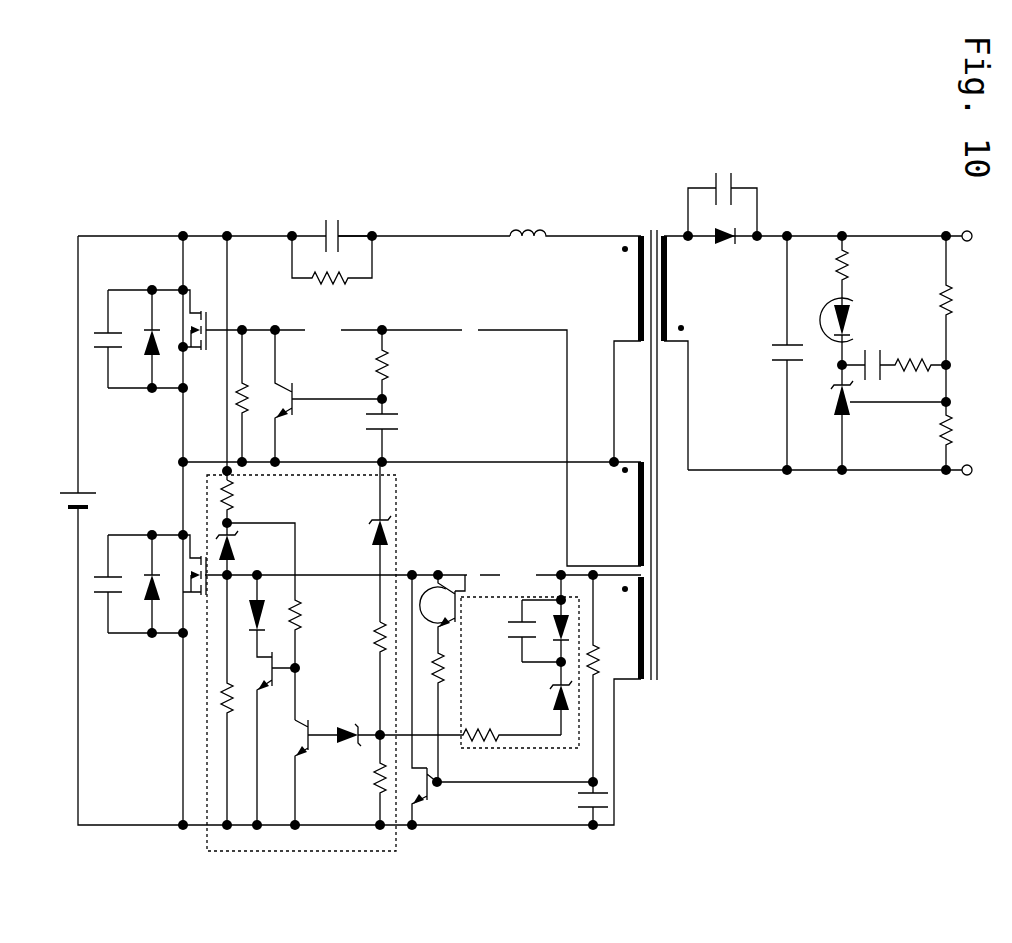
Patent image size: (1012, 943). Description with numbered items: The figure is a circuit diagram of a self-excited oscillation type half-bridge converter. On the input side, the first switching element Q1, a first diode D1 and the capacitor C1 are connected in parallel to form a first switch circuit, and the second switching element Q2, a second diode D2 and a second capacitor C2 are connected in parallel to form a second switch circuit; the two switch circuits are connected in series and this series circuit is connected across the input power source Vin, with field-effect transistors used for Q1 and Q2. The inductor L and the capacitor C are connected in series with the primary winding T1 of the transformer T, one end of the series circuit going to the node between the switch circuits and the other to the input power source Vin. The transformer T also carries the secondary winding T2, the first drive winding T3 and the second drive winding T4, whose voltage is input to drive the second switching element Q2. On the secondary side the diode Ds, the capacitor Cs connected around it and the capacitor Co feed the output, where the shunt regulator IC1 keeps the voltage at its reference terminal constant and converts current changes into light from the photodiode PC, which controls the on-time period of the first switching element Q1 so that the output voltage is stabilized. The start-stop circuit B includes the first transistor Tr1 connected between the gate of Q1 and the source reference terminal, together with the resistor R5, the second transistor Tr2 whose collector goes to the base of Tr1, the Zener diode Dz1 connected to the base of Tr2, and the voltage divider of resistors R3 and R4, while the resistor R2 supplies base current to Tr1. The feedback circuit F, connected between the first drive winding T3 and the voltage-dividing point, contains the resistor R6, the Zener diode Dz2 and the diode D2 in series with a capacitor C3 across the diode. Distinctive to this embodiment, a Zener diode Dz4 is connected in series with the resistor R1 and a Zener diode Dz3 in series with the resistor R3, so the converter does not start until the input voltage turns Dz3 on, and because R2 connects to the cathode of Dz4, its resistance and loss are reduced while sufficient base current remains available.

The input power source Vin is at (86, 486).
The second capacitor C2 is at (138, 328).
The second diode D2 is at (353, 467).
The second switching element Q2 is at (199, 310).
The capacitor C1 is at (138, 573).
The first diode D1 is at (213, 584).
The first switching element Q1 is at (198, 554).
The capacitor C is at (332, 241).
The inductor L is at (529, 218).
The transformer T is at (651, 444).
The primary winding T1 is at (621, 349).
The secondary winding T2 is at (684, 353).
The first drive winding T3 is at (623, 628).
The second drive winding T4 is at (625, 514).
The capacitor Cs is at (740, 204).
The diode Ds is at (728, 250).
The capacitor Co is at (771, 353).
The photodiode PC is at (828, 300).
The shunt regulator IC1 is at (874, 417).
The resistor R1 is at (245, 501).
The resistor R2 is at (282, 621).
The resistor R3 is at (364, 678).
The resistor R4 is at (363, 780).
The resistor R5 is at (211, 700).
The resistor R6 is at (470, 721).
The Zener diode Dz1 is at (355, 723).
The Zener diode Dz2 is at (542, 655).
The Zener diode Dz3 is at (359, 542).
The Zener diode Dz4 is at (246, 549).
The first transistor Tr1 is at (294, 738).
The second transistor Tr2 is at (300, 772).
The capacitor C3 is at (529, 630).
The start-stop circuit B is at (209, 857).
The feedback circuit F is at (462, 752).